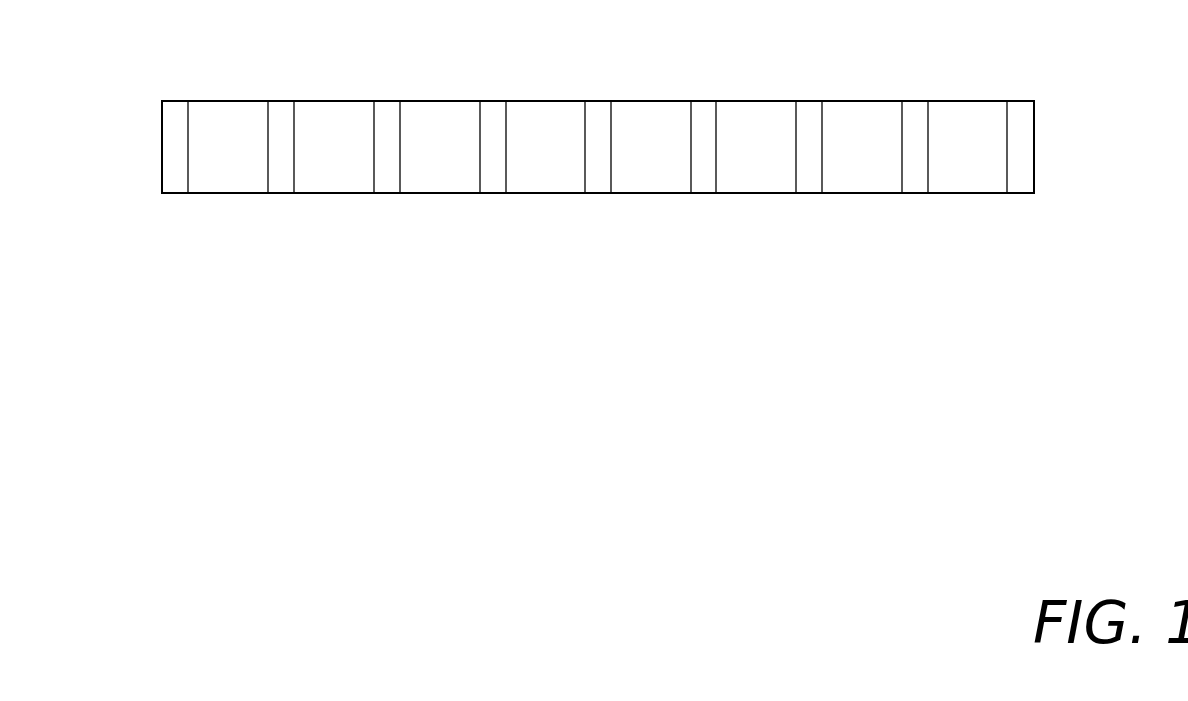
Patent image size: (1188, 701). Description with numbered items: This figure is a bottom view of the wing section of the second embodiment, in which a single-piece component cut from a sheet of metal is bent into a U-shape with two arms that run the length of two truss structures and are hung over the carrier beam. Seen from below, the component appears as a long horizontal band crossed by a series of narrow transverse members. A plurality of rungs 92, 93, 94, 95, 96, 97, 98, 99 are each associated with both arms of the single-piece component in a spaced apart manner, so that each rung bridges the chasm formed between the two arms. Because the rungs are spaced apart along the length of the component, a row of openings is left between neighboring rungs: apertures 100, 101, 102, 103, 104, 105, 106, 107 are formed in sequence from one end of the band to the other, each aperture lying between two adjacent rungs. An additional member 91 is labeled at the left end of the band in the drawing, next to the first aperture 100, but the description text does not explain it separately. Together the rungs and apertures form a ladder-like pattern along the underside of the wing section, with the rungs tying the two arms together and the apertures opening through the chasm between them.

The marker strip 91 is at (178, 116).
The rung 92 is at (282, 117).
The rung 93 is at (389, 118).
The rung 94 is at (494, 118).
The rung 95 is at (599, 118).
The rung 96 is at (704, 118).
The rung 97 is at (808, 118).
The rung 98 is at (912, 118).
The rung 99 is at (1024, 116).
The aperture 100 is at (222, 178).
The aperture 101 is at (330, 174).
The aperture 102 is at (432, 174).
The aperture 103 is at (536, 176).
The aperture 104 is at (638, 176).
The aperture 105 is at (750, 176).
The aperture 106 is at (856, 178).
The aperture 107 is at (952, 178).